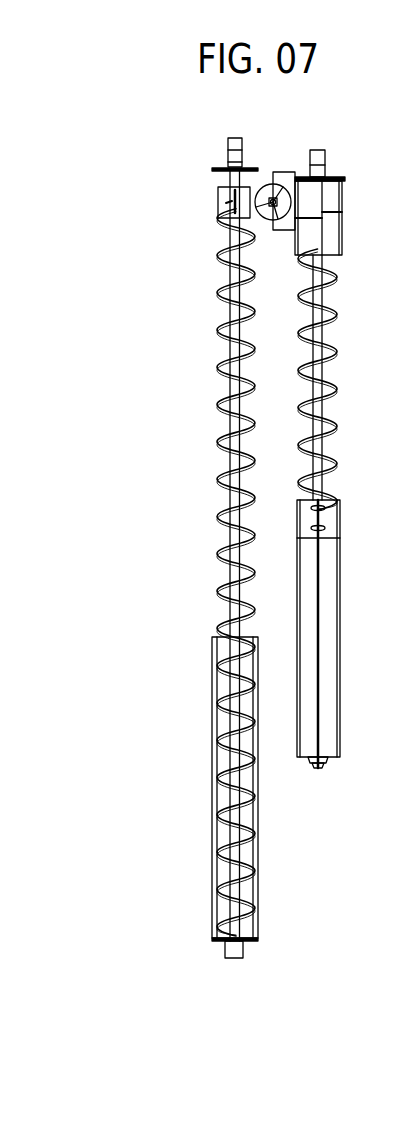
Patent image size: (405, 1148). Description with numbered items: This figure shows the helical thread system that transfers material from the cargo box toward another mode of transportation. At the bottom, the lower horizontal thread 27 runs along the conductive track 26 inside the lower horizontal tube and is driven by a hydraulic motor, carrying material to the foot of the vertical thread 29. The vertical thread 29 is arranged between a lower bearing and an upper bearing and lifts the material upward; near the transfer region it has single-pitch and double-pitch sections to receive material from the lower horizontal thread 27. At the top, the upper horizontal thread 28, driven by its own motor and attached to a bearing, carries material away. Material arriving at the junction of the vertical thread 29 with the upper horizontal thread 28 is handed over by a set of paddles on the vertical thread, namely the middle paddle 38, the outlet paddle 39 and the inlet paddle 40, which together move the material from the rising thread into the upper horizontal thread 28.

The conductive track 26 is at (210, 763).
The lower horizontal thread 27 is at (220, 298).
The upper horizontal thread 28 is at (333, 383).
The vertical thread 29 is at (272, 188).
The middle paddle 38 is at (229, 202).
The outlet paddle 39 is at (246, 195).
The inlet paddle 40 is at (222, 197).